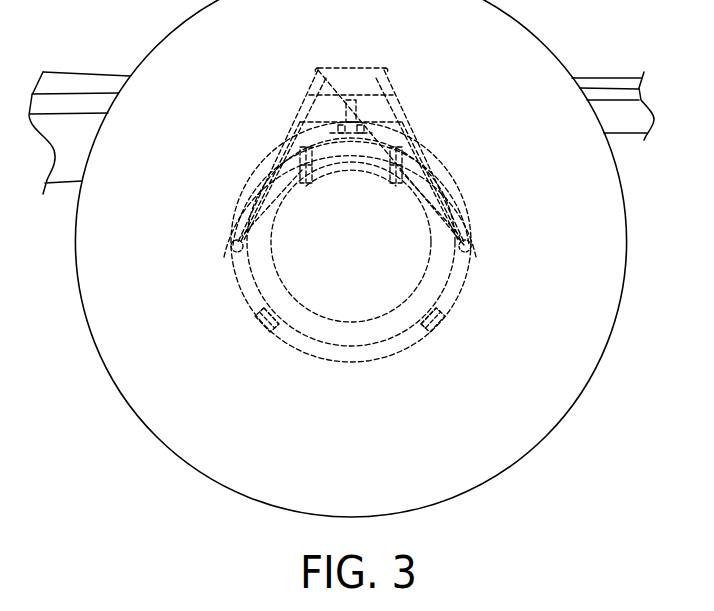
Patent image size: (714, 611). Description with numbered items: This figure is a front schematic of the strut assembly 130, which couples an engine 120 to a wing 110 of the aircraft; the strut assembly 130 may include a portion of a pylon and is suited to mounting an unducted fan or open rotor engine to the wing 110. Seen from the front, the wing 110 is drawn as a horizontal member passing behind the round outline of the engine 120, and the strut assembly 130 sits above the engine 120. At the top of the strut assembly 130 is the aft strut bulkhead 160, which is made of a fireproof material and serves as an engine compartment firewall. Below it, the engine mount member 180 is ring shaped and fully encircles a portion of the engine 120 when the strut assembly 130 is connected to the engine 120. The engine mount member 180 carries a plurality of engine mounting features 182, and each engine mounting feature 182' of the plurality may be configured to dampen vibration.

The wing 110 is at (612, 77).
The engine 120 is at (343, 338).
The strut assembly 130 is at (446, 124).
The aft strut bulkhead 160 is at (353, 68).
The engine mount member 180 is at (396, 352).
The plurality of engine mounting features 182 is at (212, 342).
The engine mounting feature 182' is at (352, 348).